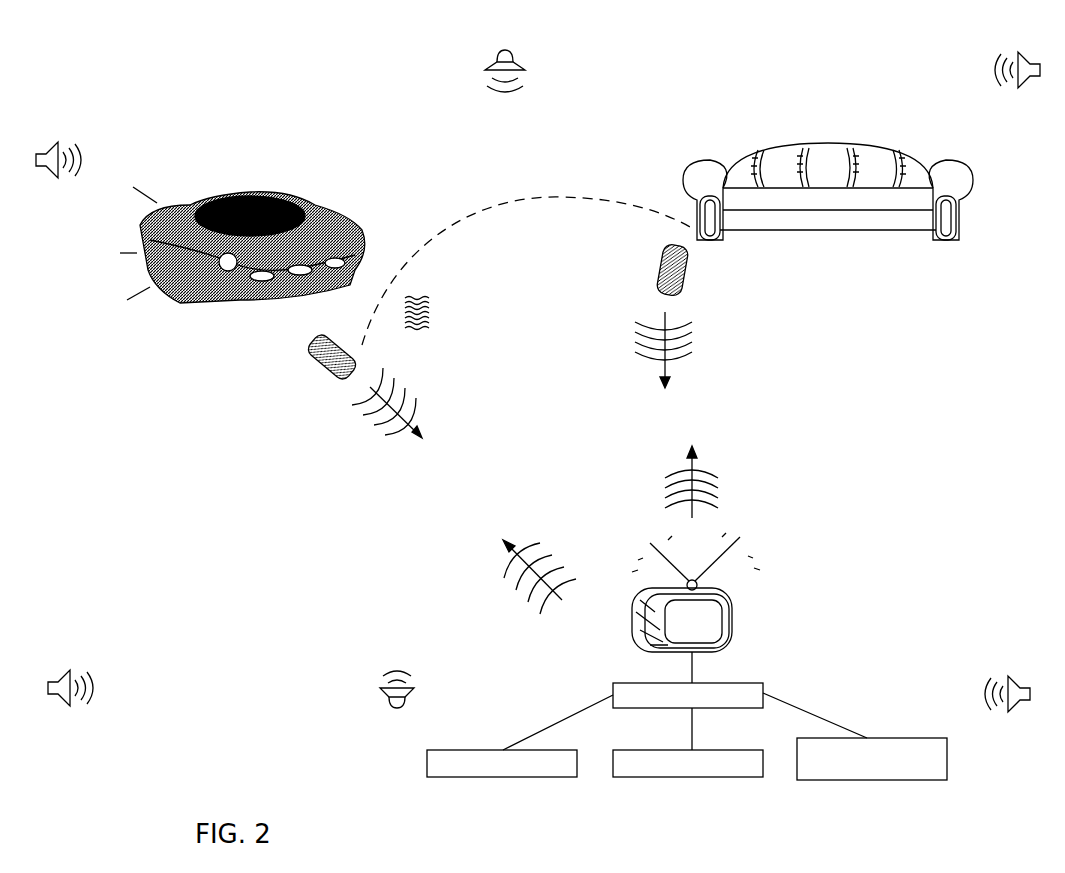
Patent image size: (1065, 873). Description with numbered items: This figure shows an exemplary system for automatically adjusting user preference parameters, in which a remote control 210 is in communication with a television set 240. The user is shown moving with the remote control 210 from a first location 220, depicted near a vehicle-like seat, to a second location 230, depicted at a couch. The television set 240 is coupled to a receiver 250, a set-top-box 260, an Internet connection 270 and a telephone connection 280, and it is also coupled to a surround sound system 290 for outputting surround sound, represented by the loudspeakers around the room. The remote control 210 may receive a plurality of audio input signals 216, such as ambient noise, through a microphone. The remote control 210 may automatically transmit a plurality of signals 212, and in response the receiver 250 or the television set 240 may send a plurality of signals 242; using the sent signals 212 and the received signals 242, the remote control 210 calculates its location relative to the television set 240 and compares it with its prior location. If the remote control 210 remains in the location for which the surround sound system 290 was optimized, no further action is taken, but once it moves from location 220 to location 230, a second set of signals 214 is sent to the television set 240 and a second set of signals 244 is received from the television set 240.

The remote control 210 is at (317, 367).
The plurality of signals 212 is at (362, 435).
The second set of signals 214 is at (697, 345).
The plurality of audio input signals 216 is at (447, 313).
The location 220 is at (202, 317).
The location 230 is at (857, 243).
The television set 240 is at (737, 622).
The plurality of signals 242 is at (560, 548).
The second set of signals 244 is at (727, 488).
The receiver 250 is at (728, 683).
The set-top-box 260 is at (492, 783).
The Internet connection 270 is at (680, 785).
The telephone connection 280 is at (880, 787).
The surround sound system 290 is at (56, 657).